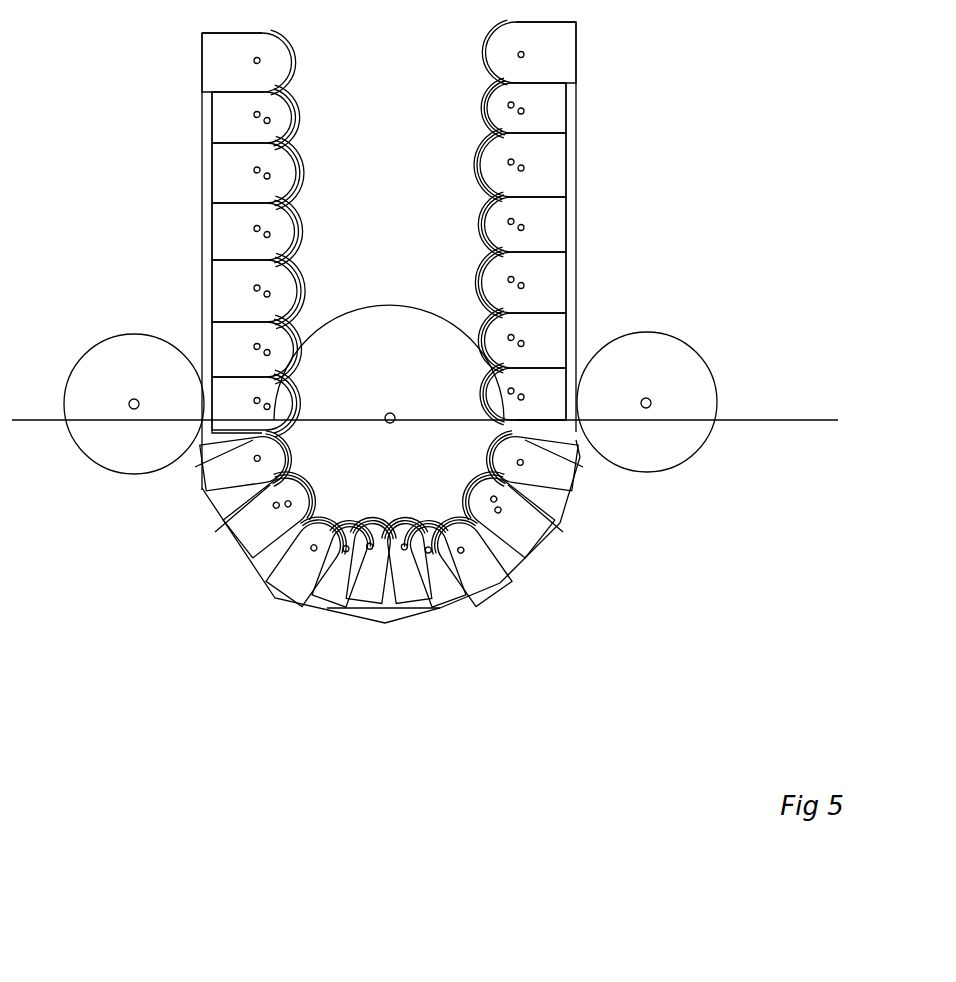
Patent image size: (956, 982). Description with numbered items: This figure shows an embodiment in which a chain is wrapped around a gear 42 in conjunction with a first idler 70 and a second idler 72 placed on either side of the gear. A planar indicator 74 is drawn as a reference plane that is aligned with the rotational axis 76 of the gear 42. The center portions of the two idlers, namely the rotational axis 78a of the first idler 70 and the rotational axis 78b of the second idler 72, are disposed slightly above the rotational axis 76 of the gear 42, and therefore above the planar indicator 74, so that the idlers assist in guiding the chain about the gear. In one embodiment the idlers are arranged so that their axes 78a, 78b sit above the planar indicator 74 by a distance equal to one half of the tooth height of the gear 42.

The gear 42 is at (371, 305).
The first idler 70 is at (88, 452).
The second idler 72 is at (678, 467).
The planar indicator 74 is at (752, 420).
The rotational axis 76 is at (392, 413).
The rotational axis of first idler 78a is at (134, 399).
The rotational axis of second idler 78b is at (646, 398).